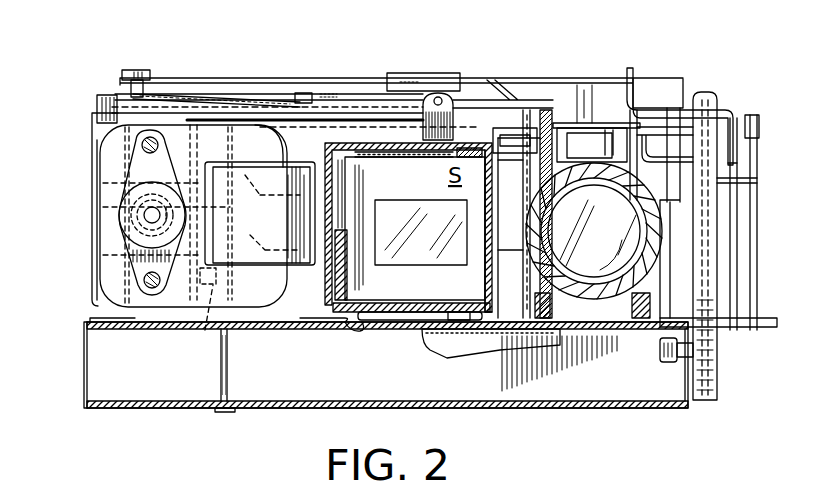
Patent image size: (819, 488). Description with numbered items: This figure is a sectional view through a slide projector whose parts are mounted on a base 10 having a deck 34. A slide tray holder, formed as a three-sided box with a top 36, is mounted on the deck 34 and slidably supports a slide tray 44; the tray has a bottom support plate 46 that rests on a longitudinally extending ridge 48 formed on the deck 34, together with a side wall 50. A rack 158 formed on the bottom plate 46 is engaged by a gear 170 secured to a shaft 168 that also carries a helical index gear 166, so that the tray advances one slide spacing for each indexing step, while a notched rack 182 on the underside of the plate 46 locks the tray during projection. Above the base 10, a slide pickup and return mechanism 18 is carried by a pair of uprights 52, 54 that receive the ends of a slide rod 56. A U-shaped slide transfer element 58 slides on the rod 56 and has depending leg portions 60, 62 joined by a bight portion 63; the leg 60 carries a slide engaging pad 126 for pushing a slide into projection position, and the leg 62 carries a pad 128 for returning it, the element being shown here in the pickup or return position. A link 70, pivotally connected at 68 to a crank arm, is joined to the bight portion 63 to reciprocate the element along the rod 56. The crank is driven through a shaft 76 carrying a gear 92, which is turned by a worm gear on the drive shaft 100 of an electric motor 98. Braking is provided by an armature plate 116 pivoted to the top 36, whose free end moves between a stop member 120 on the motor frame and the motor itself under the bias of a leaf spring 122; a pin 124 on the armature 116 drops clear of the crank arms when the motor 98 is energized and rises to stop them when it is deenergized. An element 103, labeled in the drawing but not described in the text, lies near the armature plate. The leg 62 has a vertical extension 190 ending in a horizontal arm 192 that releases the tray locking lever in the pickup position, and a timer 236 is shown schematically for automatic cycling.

The base 10 is at (75, 378).
The slide pickup and return mechanism 18 is at (360, 76).
The deck 34 is at (100, 320).
The top 36 is at (400, 153).
The slide tray 44 is at (407, 306).
The bottom support plate 46 is at (403, 320).
The ridge 48 is at (357, 330).
The side wall 50 is at (347, 280).
The upright 52 is at (750, 115).
The upright 54 is at (95, 133).
The slide rod 56 is at (279, 136).
The slide transfer element 58 is at (469, 112).
The leg portion 60 is at (284, 150).
The leg portion 62 is at (534, 180).
The bight portion 63 is at (516, 95).
The pivot 68 is at (131, 70).
The link 70 is at (485, 99).
The shaft 76 is at (230, 350).
The gear 92 is at (195, 265).
The electric motor 98 is at (110, 240).
The drive shaft 100 is at (145, 213).
The plate 103 is at (277, 93).
The armature plate 116 is at (364, 107).
The stop member 120 is at (100, 95).
The leaf spring 122 is at (165, 94).
The pin 124 is at (309, 94).
The slide engaging pad 126 is at (342, 202).
The pad 128 is at (540, 232).
The rack 158 is at (328, 324).
The helical index gear 166 is at (203, 327).
The shaft 168 is at (212, 276).
The gear 170 is at (362, 240).
The rack 182 is at (456, 311).
The vertical extension 190 is at (530, 266).
The arm 192 is at (505, 336).
The timer 236 is at (720, 355).